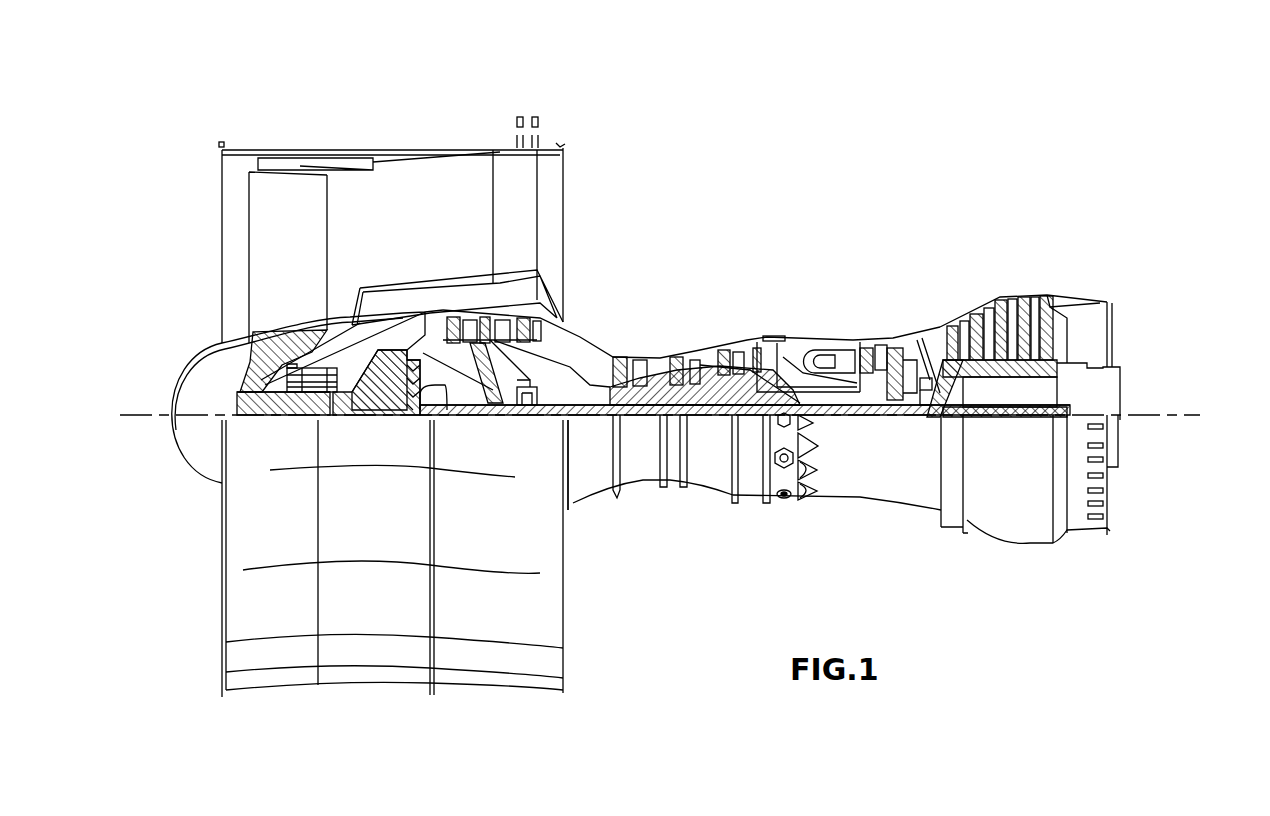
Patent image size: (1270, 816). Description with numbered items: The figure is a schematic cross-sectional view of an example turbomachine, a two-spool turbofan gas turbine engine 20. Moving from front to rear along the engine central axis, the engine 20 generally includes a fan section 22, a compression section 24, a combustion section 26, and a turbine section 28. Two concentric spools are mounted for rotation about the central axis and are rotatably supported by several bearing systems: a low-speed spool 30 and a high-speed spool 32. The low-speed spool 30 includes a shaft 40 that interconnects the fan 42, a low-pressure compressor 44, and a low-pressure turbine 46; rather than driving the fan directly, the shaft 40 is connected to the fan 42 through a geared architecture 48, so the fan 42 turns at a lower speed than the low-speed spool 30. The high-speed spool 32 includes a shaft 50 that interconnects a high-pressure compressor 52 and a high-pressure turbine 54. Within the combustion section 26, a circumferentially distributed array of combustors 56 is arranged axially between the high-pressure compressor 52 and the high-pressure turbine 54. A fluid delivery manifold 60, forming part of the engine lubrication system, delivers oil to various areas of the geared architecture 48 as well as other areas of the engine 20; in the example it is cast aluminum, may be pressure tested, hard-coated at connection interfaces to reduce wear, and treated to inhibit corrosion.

The gas turbine engine 20 is at (828, 195).
The fan section 22 is at (325, 141).
The compression section 24 is at (613, 325).
The combustion section 26 is at (821, 312).
The turbine section 28 is at (962, 278).
The low-speed spool 30 is at (717, 417).
The high-speed spool 32 is at (753, 372).
The shaft 40 is at (580, 417).
The fan 42 is at (303, 270).
The low-pressure compressor 44 is at (573, 353).
The low-pressure turbine 46 is at (992, 335).
The geared architecture 48 is at (397, 417).
The shaft 50 is at (827, 413).
The high-pressure compressor 52 is at (690, 383).
The high-pressure turbine 54 is at (880, 340).
The combustors 56 is at (820, 360).
The fluid delivery manifold 60 is at (443, 408).